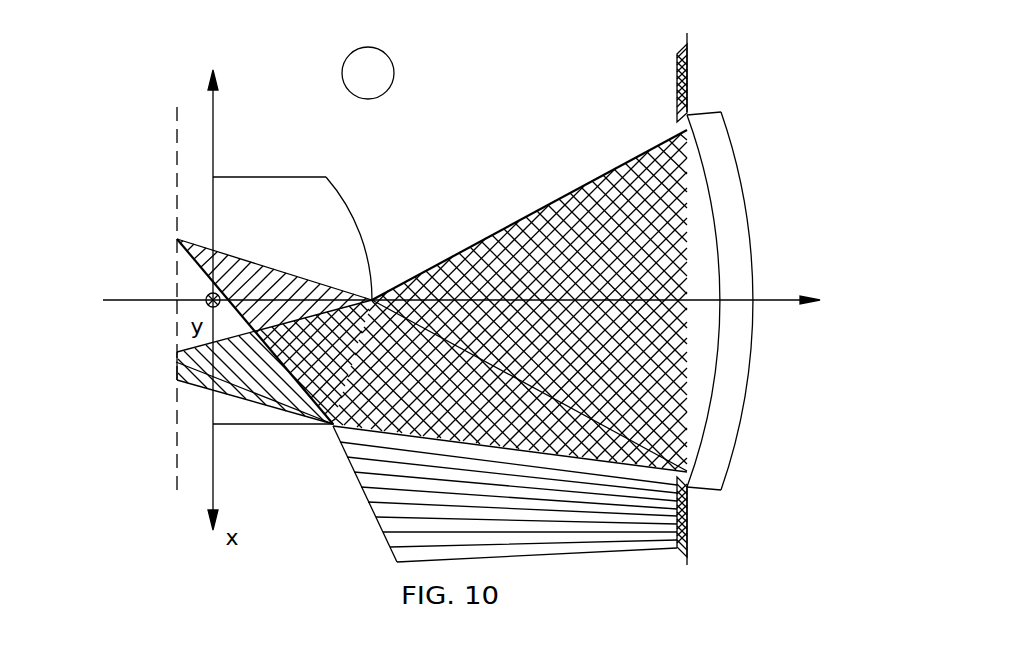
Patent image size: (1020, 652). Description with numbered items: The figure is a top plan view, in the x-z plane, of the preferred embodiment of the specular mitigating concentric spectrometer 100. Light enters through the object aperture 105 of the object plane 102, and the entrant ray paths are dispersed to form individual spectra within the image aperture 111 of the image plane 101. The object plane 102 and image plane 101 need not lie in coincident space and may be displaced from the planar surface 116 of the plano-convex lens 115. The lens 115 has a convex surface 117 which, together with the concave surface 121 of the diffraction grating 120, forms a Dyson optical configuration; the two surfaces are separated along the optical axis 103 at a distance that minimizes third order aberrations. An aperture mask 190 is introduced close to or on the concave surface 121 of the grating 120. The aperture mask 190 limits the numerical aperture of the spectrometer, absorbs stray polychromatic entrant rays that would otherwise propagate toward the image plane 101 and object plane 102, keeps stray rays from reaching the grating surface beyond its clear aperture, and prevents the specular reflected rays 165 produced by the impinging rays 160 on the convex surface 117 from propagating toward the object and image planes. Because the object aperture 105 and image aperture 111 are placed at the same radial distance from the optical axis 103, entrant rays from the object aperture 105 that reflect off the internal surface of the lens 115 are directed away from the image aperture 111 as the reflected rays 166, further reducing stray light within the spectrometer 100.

The specular mitigating concentric spectrometer 100 is at (368, 73).
The image plane 101 is at (177, 137).
The object plane 102 is at (176, 465).
The optical axis 103 is at (770, 300).
The object aperture 105 is at (176, 355).
The image aperture 111 is at (176, 374).
The plano-convex lens 115 is at (290, 193).
The planar surface 116 is at (212, 408).
The convex surface 117 is at (347, 196).
The diffraction grating 120 is at (709, 298).
The concave surface 121 is at (686, 130).
The impinging rays 160 is at (357, 430).
The specular reflected rays 165 is at (370, 506).
The reflected rays 166 is at (258, 270).
The aperture mask 190 is at (676, 88).